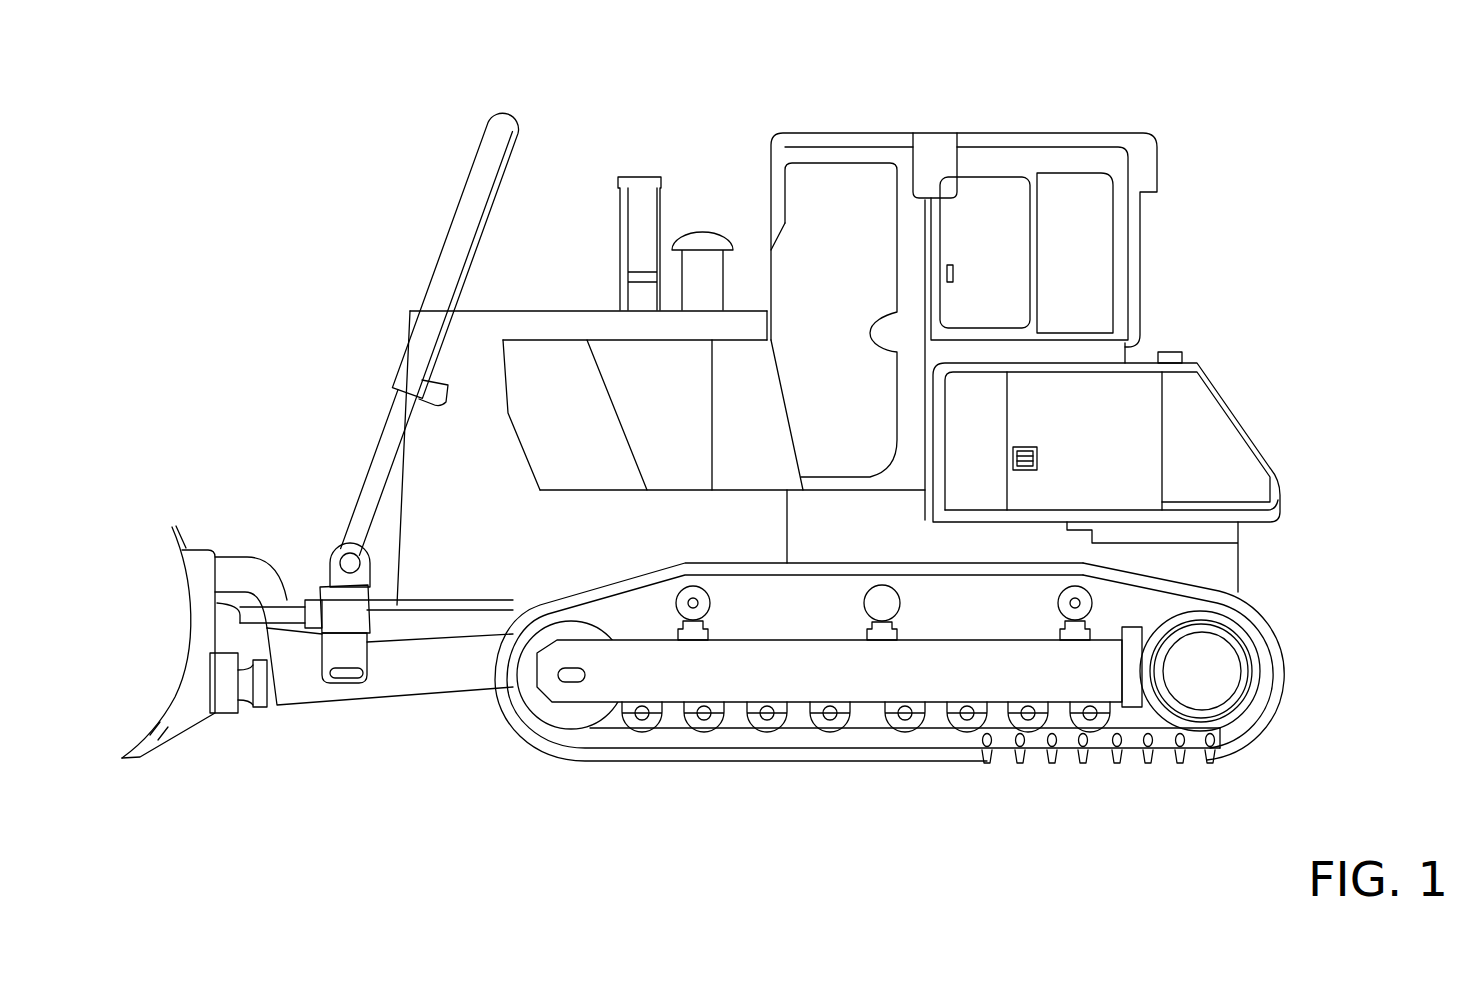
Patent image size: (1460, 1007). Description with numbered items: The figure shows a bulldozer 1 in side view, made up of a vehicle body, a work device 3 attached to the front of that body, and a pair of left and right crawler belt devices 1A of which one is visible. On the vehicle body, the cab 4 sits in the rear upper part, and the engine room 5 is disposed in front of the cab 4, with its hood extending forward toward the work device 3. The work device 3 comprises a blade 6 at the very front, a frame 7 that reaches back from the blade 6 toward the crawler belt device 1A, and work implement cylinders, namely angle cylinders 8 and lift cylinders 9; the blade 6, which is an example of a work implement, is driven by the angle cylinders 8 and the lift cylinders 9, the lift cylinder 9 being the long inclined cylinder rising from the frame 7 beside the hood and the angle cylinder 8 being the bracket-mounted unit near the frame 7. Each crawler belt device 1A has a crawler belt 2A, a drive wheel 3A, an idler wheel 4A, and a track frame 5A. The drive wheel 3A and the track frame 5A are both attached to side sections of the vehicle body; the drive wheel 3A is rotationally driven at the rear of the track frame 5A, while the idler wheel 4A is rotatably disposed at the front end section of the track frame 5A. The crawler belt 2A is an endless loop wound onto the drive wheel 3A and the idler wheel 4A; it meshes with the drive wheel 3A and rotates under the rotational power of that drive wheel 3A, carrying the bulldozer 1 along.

The bulldozer 1 is at (1053, 95).
The crawler belt device 1A is at (519, 751).
The crawler belt 2A is at (1100, 752).
The work device 3 is at (815, 123).
The drive wheel 3A is at (1255, 672).
The cab 4 is at (905, 185).
The idler wheel 4A is at (570, 716).
The engine room 5 is at (548, 365).
The track frame 5A is at (737, 682).
The blade 6 is at (188, 617).
The frame 7 is at (427, 680).
The angle cylinder 8 is at (388, 607).
The lift cylinder 9 is at (478, 197).